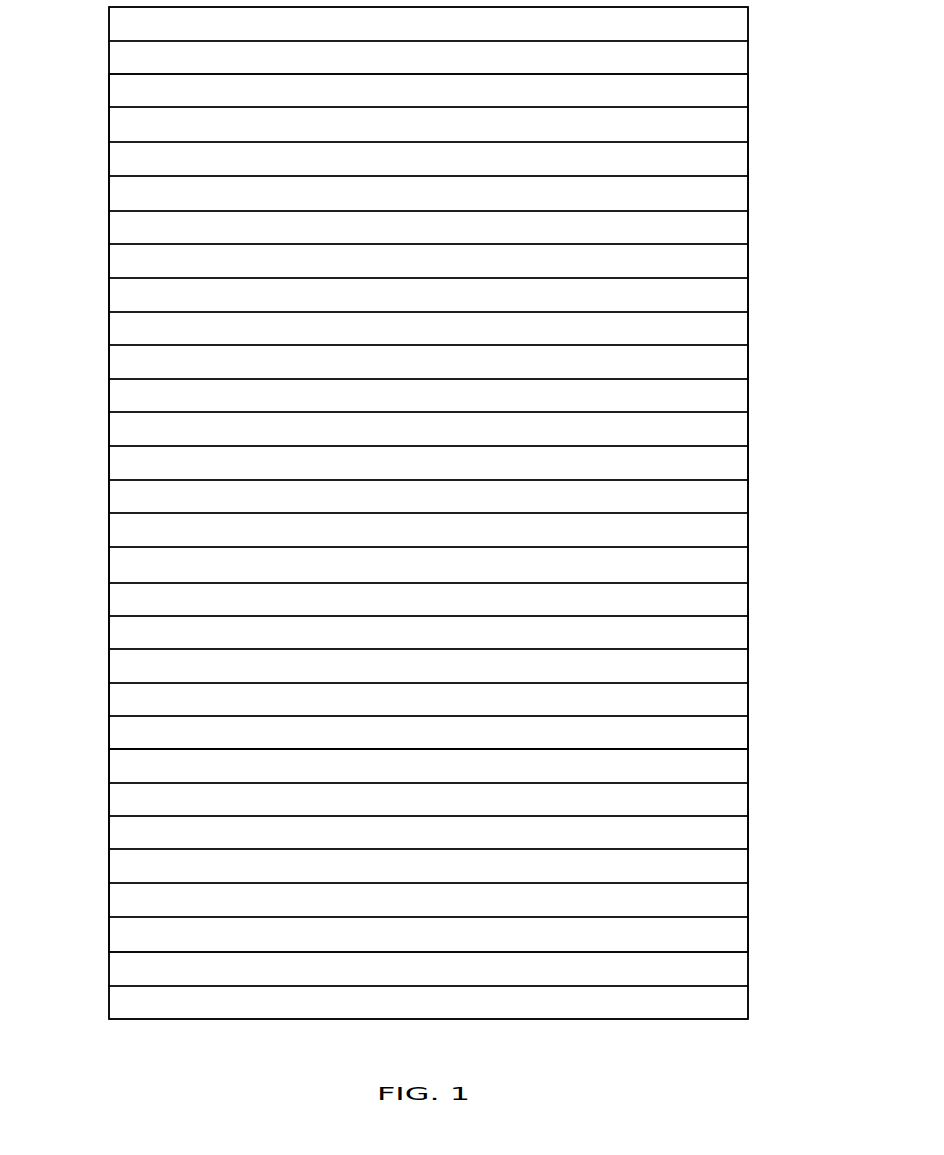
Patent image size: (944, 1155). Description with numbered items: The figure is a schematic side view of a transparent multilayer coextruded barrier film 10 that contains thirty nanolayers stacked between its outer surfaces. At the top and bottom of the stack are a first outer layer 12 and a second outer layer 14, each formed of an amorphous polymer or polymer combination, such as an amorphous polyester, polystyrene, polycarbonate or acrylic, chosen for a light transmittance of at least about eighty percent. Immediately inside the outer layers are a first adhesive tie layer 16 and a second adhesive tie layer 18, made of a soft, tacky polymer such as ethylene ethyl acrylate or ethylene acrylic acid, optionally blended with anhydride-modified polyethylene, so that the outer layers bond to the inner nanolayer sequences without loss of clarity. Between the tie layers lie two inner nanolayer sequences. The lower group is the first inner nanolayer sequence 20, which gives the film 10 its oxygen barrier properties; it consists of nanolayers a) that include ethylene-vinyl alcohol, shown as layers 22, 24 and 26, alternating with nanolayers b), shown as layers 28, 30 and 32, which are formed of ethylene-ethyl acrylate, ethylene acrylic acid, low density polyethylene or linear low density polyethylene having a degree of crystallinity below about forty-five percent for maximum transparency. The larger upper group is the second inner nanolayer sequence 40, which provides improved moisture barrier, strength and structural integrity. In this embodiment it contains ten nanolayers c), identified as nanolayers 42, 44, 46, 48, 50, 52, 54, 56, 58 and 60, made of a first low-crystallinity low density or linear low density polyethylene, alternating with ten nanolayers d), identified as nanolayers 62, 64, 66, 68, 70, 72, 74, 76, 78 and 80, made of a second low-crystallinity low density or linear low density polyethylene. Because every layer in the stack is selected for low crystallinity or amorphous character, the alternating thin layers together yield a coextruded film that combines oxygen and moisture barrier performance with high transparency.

The multilayer coextruded film 10 is at (812, 195).
The first outer layer 12 is at (737, 25).
The second outer layer 14 is at (737, 1003).
The first adhesive tie layer 16 is at (737, 58).
The second adhesive tie layer 18 is at (737, 970).
The first inner nanolayer sequence 20 is at (756, 751).
The nanolayer a) 22 is at (118, 936).
The nanolayer a) 24 is at (118, 868).
The nanolayer a) 26 is at (118, 802).
The nanolayer b) 28 is at (118, 902).
The nanolayer b) 30 is at (118, 834).
The nanolayer b) 32 is at (118, 768).
The second inner nanolayer sequence 40 is at (755, 78).
The nanolayer c) 42 is at (118, 734).
The nanolayer c) 44 is at (118, 668).
The nanolayer c) 46 is at (118, 602).
The nanolayer c) 48 is at (118, 532).
The nanolayer c) 50 is at (118, 465).
The nanolayer c) 52 is at (118, 398).
The nanolayer c) 54 is at (118, 330).
The nanolayer c) 56 is at (118, 263).
The nanolayer c) 58 is at (118, 196).
The nanolayer c) 60 is at (118, 126).
The nanolayer d) 62 is at (118, 702).
The nanolayer d) 64 is at (118, 634).
The nanolayer d) 66 is at (118, 567).
The nanolayer d) 68 is at (118, 498).
The nanolayer d) 70 is at (118, 431).
The nanolayer d) 72 is at (118, 364).
The nanolayer d) 74 is at (118, 297).
The nanolayer d) 76 is at (118, 230).
The nanolayer d) 78 is at (118, 161).
The nanolayer d) 80 is at (118, 92).